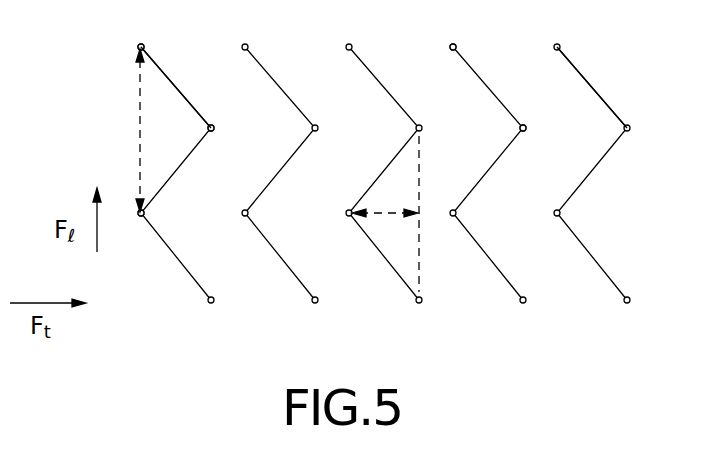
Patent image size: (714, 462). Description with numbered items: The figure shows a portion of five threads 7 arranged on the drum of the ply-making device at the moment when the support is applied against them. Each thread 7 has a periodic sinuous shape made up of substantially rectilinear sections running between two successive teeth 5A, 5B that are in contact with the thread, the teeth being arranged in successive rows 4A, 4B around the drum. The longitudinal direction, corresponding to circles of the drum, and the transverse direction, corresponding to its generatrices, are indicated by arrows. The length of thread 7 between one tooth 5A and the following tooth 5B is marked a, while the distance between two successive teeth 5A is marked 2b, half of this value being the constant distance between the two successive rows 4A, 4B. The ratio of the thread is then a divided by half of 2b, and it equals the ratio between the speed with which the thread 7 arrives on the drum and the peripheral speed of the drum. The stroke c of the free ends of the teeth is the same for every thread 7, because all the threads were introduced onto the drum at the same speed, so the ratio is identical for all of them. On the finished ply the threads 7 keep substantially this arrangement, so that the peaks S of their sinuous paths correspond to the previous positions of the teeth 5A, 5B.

The tooth 5A is at (145, 46).
The following tooth 5B is at (215, 128).
The row 4A is at (560, 44).
The row 4B is at (631, 128).
The thread 7 is at (178, 268).
The peak S is at (249, 45).
The length of thread a is at (177, 83).
The distance between two successive teeth 2b is at (138, 123).
The stroke c is at (388, 211).